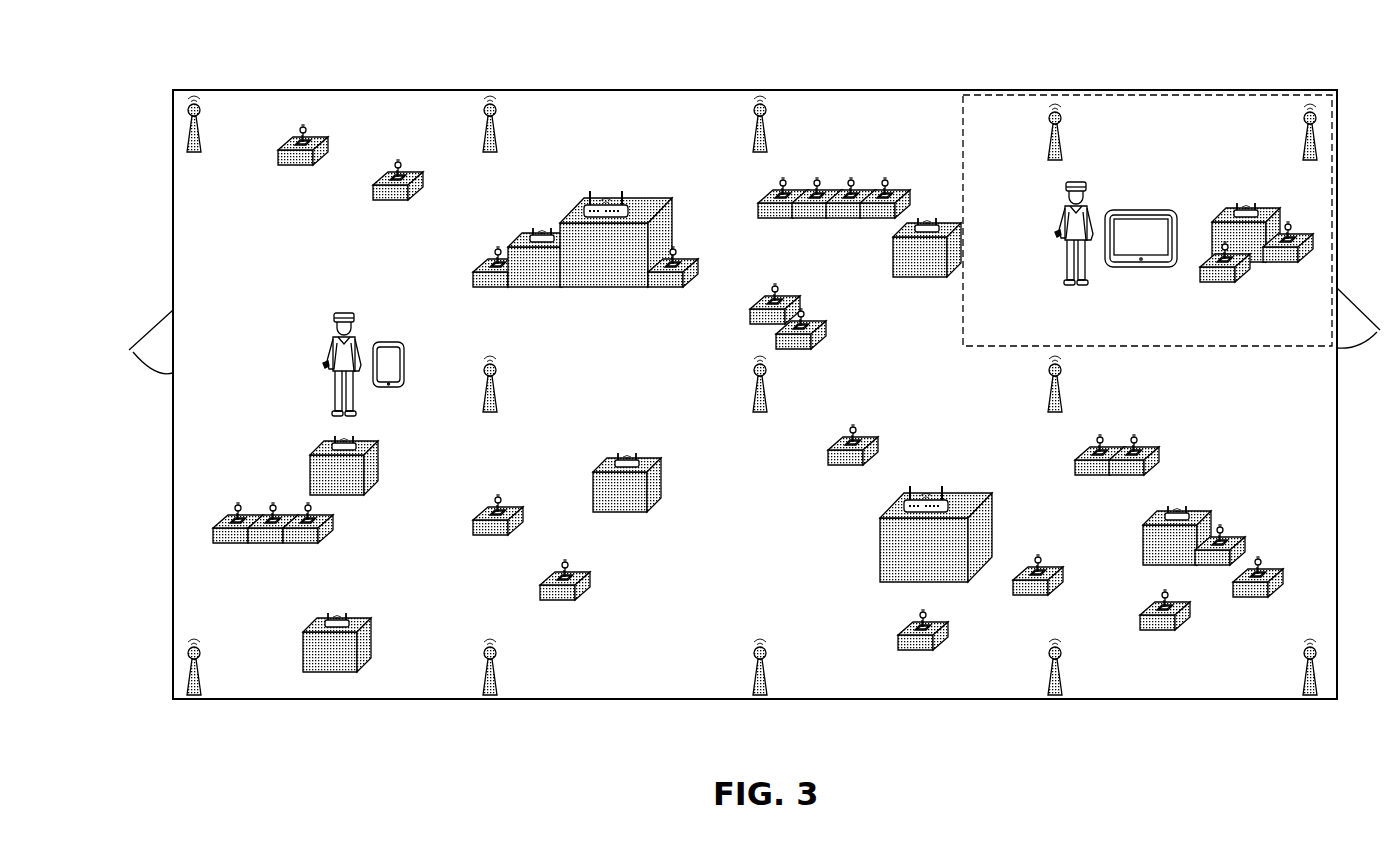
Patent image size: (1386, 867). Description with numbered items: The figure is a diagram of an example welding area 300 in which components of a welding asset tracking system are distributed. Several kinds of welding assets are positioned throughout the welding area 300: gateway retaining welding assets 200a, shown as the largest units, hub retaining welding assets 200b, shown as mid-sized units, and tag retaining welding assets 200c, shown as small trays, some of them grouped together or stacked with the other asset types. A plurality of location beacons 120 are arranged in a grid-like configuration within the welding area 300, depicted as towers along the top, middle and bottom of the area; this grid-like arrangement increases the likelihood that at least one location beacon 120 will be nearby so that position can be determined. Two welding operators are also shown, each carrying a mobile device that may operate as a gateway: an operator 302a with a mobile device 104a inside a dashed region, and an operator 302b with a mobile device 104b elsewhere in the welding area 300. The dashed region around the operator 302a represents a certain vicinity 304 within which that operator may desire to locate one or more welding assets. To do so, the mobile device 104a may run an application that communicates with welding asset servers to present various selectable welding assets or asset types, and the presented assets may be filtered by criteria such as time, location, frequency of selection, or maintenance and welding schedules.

The welding area 300 is at (394, 88).
The vicinity 304 is at (1258, 350).
The location beacon 120 is at (184, 128).
The gateway retaining welding asset 200a is at (676, 226).
The hub retaining welding asset 200b is at (518, 246).
The tag retaining welding asset 200c is at (276, 152).
The operator 302a is at (1055, 222).
The operator 302b is at (324, 358).
The mobile device 104a is at (1141, 209).
The mobile device 104b is at (412, 372).